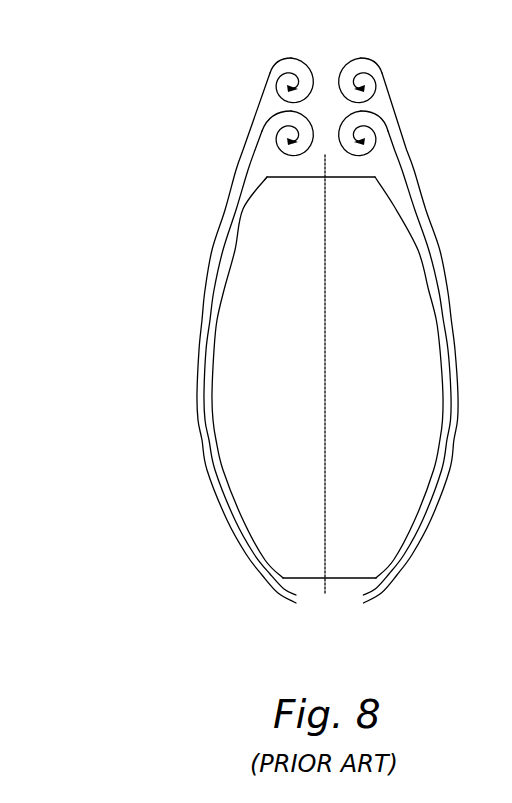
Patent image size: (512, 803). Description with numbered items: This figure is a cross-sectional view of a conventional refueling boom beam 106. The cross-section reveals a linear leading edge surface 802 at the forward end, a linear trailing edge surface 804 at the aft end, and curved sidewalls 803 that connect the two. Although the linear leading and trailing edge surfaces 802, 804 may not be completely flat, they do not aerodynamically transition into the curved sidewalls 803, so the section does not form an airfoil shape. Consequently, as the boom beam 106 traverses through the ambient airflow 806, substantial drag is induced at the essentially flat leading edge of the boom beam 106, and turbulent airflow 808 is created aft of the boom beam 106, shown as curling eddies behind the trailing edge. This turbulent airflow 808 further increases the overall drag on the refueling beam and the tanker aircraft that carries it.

The refueling boom beam 106 is at (204, 543).
The linear leading edge surface 802 is at (343, 580).
The curved sidewalls 803 is at (228, 492).
The linear trailing edge surface 804 is at (310, 178).
The ambient airflow 806 is at (197, 398).
The turbulent airflow 808 is at (243, 108).